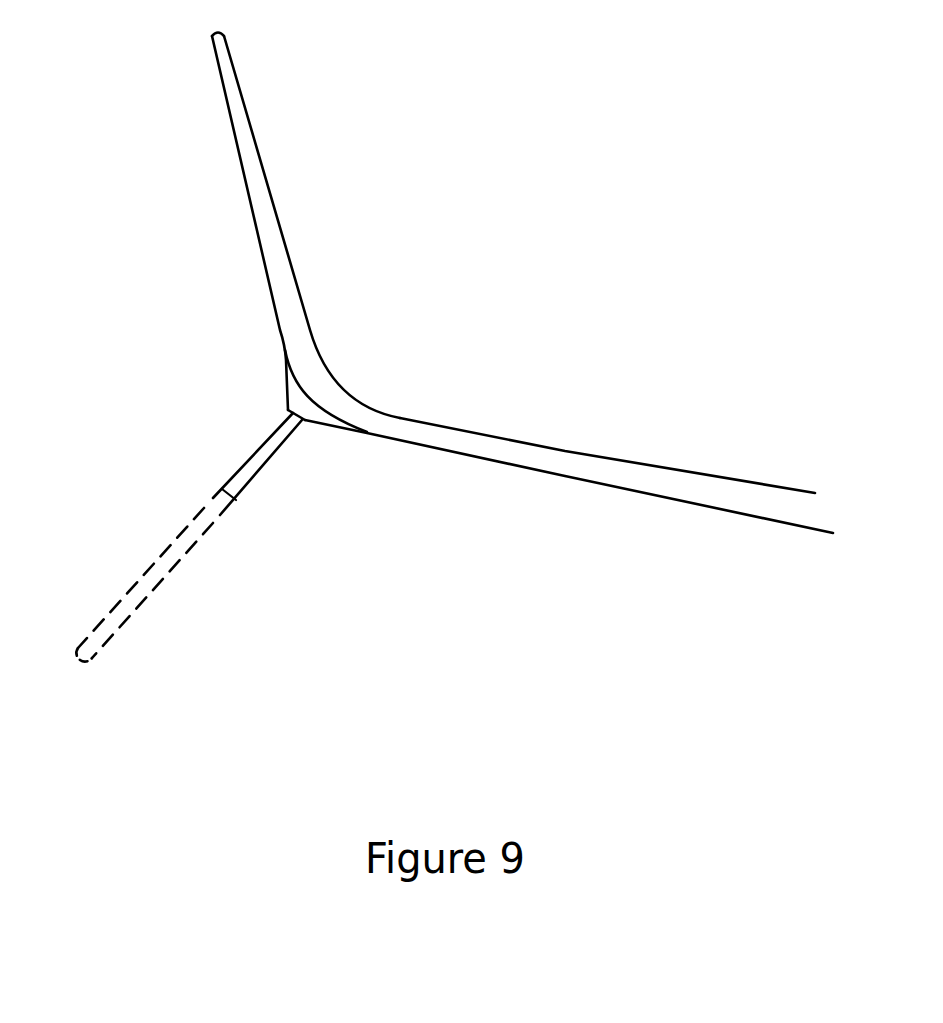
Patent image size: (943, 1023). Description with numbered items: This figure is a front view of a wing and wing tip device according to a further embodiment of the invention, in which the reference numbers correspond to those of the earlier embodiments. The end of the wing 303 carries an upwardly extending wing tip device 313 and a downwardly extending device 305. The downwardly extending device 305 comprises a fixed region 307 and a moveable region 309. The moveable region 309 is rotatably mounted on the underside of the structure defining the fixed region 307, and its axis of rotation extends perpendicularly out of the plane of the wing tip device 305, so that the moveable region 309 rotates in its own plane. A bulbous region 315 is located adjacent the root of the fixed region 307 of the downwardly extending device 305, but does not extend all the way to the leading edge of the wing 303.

The end of a wing 303 is at (565, 470).
The downwardly extending device 305 is at (262, 537).
The fixed region 307 is at (240, 464).
The moveable region 309 is at (148, 566).
The upwardly extending wing tip device 313 is at (225, 129).
The bulbous region 315 is at (305, 397).